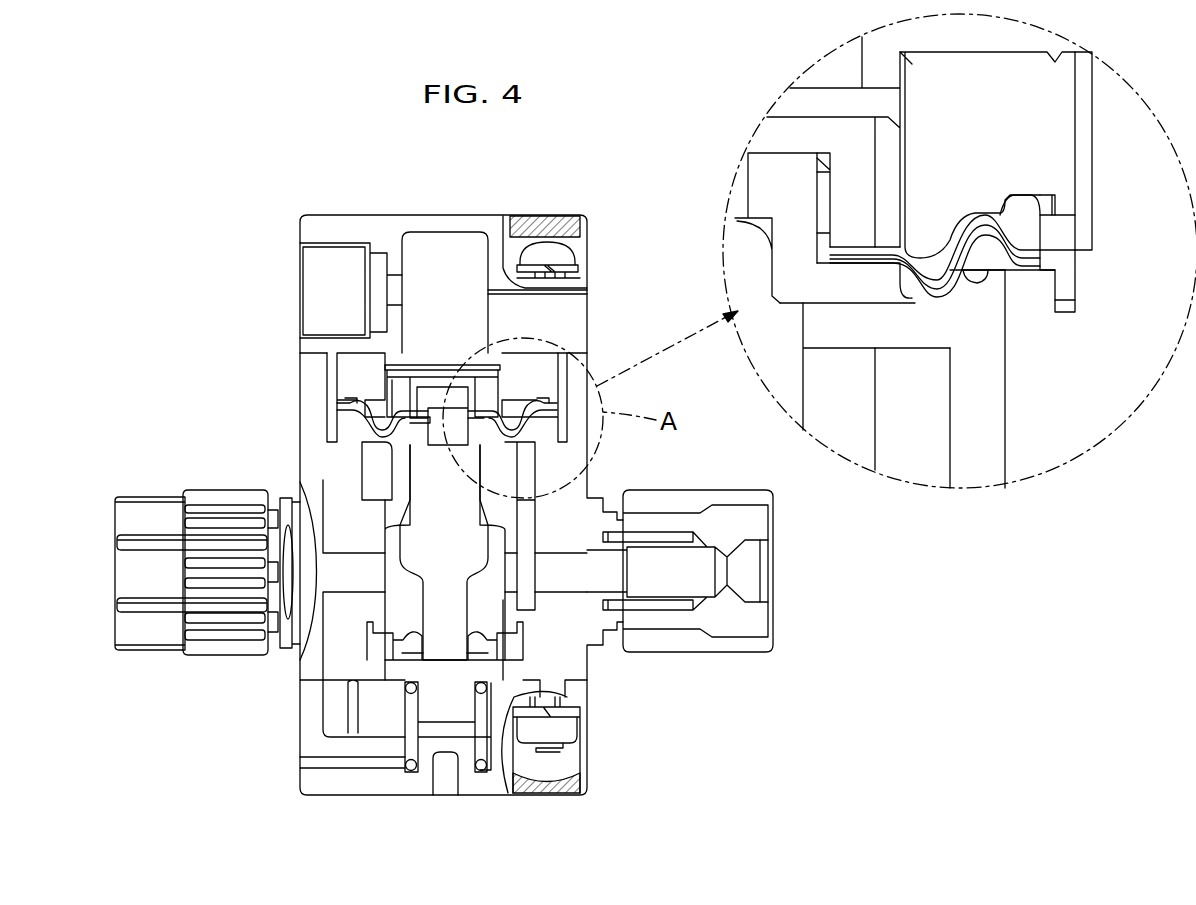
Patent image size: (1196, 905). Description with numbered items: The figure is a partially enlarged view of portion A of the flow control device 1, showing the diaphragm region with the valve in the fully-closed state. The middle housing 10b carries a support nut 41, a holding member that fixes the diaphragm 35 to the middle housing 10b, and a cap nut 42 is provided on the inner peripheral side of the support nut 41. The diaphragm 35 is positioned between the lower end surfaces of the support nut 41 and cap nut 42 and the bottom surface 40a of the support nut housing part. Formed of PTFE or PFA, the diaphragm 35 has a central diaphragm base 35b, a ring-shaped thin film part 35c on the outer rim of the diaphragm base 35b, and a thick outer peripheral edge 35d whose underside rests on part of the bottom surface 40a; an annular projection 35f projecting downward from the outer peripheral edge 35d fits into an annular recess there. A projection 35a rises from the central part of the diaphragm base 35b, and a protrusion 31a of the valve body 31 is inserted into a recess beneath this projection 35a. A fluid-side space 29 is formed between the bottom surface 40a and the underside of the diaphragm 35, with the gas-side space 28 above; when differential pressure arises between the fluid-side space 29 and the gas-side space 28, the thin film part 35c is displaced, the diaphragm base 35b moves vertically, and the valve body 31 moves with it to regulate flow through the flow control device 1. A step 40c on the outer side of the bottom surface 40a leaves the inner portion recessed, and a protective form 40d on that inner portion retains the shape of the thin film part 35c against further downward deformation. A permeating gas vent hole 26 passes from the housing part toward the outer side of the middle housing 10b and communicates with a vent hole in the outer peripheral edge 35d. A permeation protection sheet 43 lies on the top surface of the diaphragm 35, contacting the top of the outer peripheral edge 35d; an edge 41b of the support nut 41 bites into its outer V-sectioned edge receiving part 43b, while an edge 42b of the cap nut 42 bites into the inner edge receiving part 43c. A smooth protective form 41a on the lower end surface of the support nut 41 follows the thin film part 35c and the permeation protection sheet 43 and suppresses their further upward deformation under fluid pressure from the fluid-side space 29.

The flow control device 1 is at (580, 180).
The middle housing 10b is at (600, 470).
The permeating gas vent hole 26 is at (330, 413).
The gas-side space 28 is at (430, 366).
The fluid-side space 29 is at (392, 472).
The valve body 31 is at (476, 543).
The protrusion 31a is at (455, 408).
The diaphragm 35 is at (340, 419).
The projection 35a is at (820, 160).
The diaphragm base 35b is at (820, 325).
The thin film part 35c is at (915, 300).
The outer peripheral edge 35d is at (1067, 257).
The annular projection 35f is at (1070, 300).
The bottom surface 40a is at (375, 445).
The step 40c is at (995, 272).
The protective form 40d is at (962, 322).
The support nut 41 is at (337, 372).
The protective form 41a is at (1060, 160).
The edge 41b is at (1040, 235).
The cap nut 42 is at (400, 392).
The edge 42b is at (850, 253).
The permeation protection sheet 43 is at (540, 400).
The edge receiving part 43b is at (1035, 196).
The edge receiving part 43c is at (855, 250).